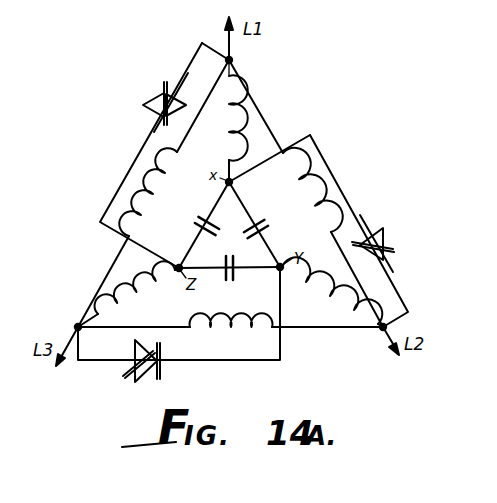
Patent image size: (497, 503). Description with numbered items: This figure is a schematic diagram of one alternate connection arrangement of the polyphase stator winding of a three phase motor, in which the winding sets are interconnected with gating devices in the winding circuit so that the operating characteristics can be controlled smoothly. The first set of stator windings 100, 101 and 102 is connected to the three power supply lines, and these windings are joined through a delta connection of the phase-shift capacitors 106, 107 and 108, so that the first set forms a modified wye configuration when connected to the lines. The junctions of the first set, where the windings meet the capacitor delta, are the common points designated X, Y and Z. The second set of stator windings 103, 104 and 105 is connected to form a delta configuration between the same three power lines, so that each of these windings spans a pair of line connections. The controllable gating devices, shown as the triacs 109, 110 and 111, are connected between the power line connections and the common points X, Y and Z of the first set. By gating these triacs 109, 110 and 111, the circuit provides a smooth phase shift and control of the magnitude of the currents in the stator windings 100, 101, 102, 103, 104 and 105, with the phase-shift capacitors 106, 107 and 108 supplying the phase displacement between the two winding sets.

The stator winding 100 is at (236, 140).
The stator winding 101 is at (335, 292).
The stator winding 102 is at (124, 294).
The stator winding 103 is at (303, 178).
The stator winding 104 is at (217, 330).
The stator winding 105 is at (150, 181).
The phase-shift capacitor 106 is at (264, 223).
The phase-shift capacitor 107 is at (229, 282).
The phase-shift capacitor 108 is at (197, 221).
The triac 109 is at (383, 227).
The triac 110 is at (158, 376).
The triac 111 is at (147, 92).